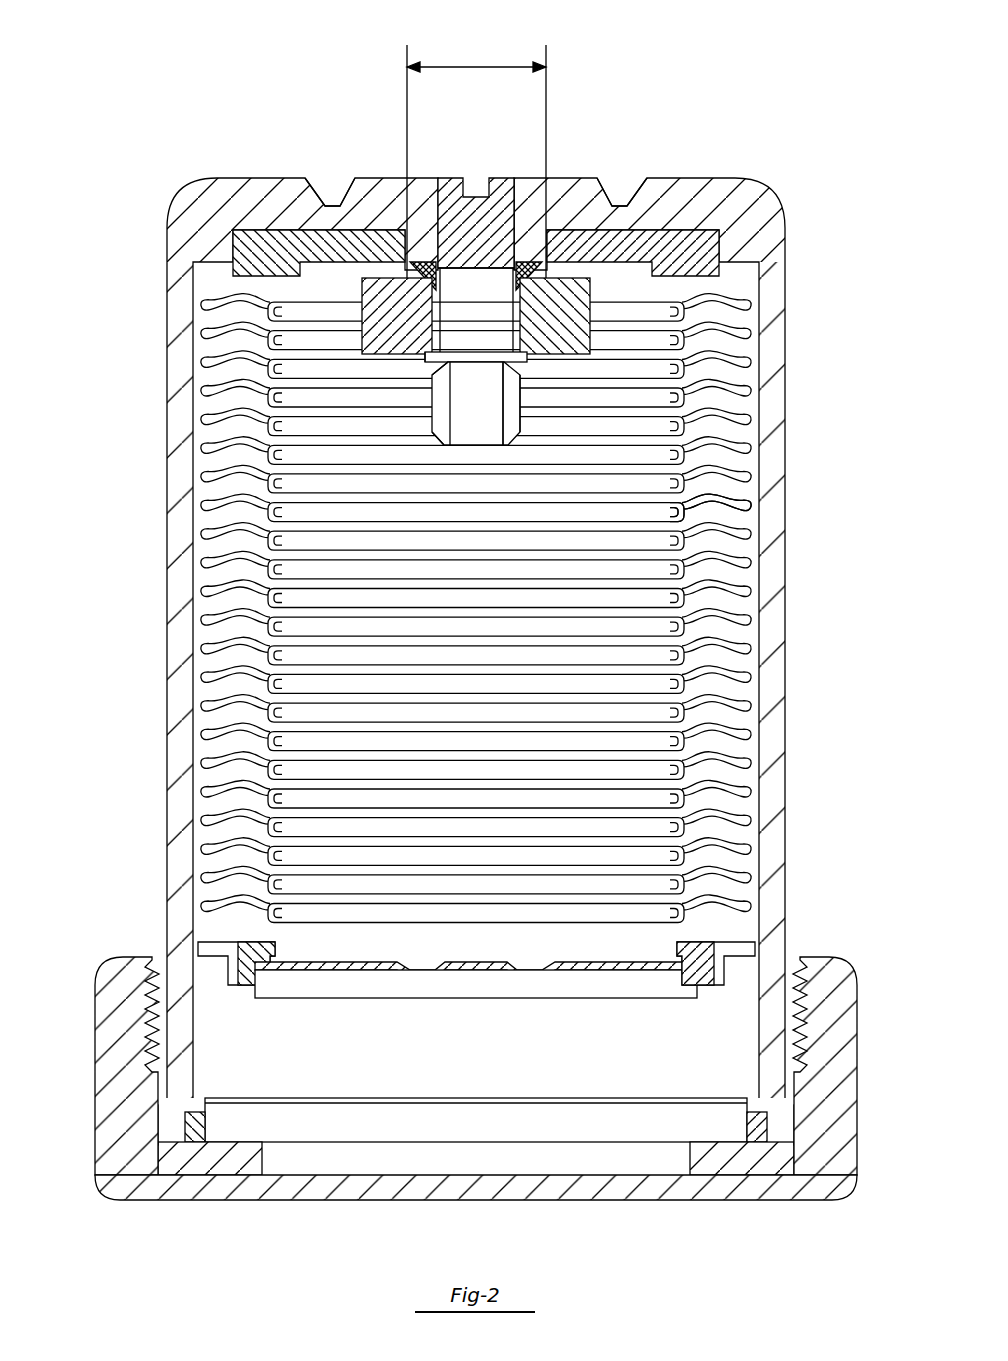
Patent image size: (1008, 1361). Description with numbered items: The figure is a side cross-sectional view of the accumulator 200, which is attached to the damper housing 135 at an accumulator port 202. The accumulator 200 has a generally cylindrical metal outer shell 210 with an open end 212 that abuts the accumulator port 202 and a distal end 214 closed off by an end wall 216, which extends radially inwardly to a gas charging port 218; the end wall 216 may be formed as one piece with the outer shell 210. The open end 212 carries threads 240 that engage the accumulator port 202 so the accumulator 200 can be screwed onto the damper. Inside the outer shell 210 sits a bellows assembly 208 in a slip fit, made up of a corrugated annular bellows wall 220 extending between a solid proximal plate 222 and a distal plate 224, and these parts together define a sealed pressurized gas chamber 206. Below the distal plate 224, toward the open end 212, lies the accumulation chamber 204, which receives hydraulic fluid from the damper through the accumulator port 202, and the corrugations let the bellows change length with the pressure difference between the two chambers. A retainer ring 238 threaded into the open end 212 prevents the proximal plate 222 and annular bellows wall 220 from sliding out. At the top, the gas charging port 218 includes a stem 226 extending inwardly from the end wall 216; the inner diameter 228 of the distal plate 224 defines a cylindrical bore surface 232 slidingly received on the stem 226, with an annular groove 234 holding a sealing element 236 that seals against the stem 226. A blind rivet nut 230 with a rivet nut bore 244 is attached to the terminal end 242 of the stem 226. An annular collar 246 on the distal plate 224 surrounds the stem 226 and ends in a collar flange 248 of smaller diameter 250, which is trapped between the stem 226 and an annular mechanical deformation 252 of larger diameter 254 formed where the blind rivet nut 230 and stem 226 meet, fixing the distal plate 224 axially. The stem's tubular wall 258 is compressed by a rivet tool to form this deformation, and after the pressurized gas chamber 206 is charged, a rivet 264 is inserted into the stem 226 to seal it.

The accumulator 200 is at (442, 584).
The accumulator port 202 is at (362, 1160).
The accumulation chamber 204 is at (600, 1072).
The pressurized gas chamber 206 is at (620, 740).
The bellows assembly 208 is at (240, 992).
The outer shell 210 is at (180, 640).
The open end 212 is at (786, 1178).
The distal end 214 is at (236, 168).
The end wall 216 is at (328, 215).
The gas charging port 218 is at (500, 290).
The annular bellows wall 220 is at (752, 500).
The proximal plate 222 is at (622, 968).
The distal plate 224 is at (641, 245).
The stem 226 is at (524, 352).
The inner diameter 228 is at (474, 64).
The blind rivet nut 230 is at (526, 424).
The cylindrical bore surface 232 is at (530, 262).
The annular groove 234 is at (550, 330).
The sealing element 236 is at (582, 296).
The retainer ring 238 is at (200, 1160).
The threads 240 is at (808, 990).
The terminal end 242 is at (430, 386).
The rivet nut bore 244 is at (462, 407).
The annular collar 246 is at (430, 347).
The collar flange 248 is at (428, 358).
The smaller diameter 250 is at (475, 342).
The mechanical deformation 252 is at (428, 364).
The larger diameter 254 is at (470, 370).
The tubular wall 258 is at (508, 406).
The rivet 264 is at (452, 208).
The damper housing 135 is at (105, 1068).